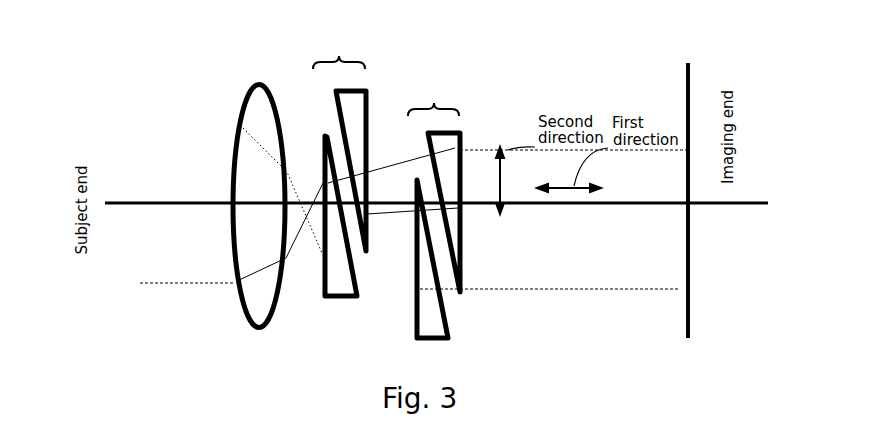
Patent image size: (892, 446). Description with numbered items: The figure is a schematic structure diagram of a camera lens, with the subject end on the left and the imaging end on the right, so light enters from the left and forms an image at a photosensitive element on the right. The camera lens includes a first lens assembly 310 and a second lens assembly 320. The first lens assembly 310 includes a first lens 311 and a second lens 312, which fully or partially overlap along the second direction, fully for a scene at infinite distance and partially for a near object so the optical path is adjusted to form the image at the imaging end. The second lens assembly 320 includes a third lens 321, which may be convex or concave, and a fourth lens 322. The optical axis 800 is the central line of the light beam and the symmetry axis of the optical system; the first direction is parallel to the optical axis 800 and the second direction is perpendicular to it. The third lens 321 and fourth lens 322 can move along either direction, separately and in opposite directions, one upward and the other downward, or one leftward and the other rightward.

The first lens assembly 310 is at (356, 62).
The first lens 311 is at (346, 287).
The second lens 312 is at (372, 105).
The second lens assembly 320 is at (447, 108).
The third lens 321 is at (416, 336).
The fourth lens 322 is at (447, 155).
The optical axis 800 is at (725, 203).